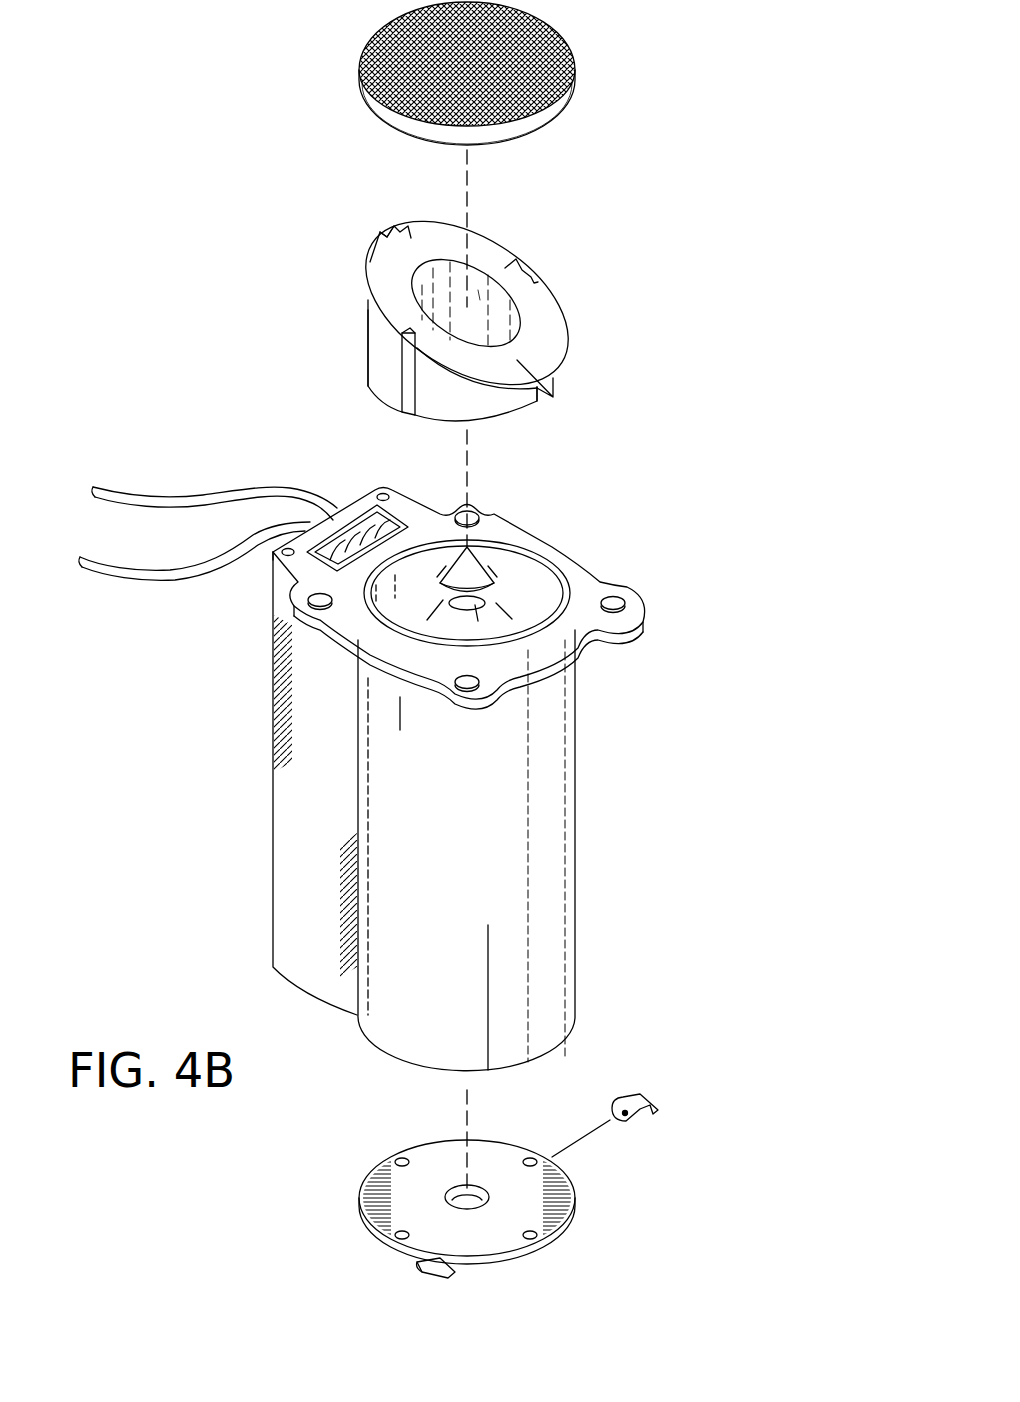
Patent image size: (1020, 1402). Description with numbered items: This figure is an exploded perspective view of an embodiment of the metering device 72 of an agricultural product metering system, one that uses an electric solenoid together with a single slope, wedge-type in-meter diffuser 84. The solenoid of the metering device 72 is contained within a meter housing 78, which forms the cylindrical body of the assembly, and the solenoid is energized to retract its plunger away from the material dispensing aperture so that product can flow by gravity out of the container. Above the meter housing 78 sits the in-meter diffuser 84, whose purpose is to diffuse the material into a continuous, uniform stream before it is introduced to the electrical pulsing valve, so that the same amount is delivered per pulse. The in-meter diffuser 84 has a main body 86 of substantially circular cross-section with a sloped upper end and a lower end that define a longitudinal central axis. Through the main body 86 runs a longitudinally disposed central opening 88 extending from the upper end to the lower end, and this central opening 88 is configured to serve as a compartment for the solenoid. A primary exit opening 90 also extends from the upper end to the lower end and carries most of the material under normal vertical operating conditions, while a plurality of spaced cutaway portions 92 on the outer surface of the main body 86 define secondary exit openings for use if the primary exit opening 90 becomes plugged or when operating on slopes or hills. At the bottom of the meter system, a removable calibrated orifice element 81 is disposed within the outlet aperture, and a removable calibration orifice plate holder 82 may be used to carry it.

The metering device 72 is at (737, 371).
The meter housing 78 is at (576, 820).
The removable calibrated orifice element 81 is at (648, 1100).
The removable calibration orifice plate holder 82 is at (493, 1140).
The in-meter diffuser 84 is at (549, 290).
The main body 86 is at (367, 310).
The central opening 88 is at (478, 290).
The primary exit opening 90 is at (542, 402).
The cutaway portions 92 is at (388, 225).